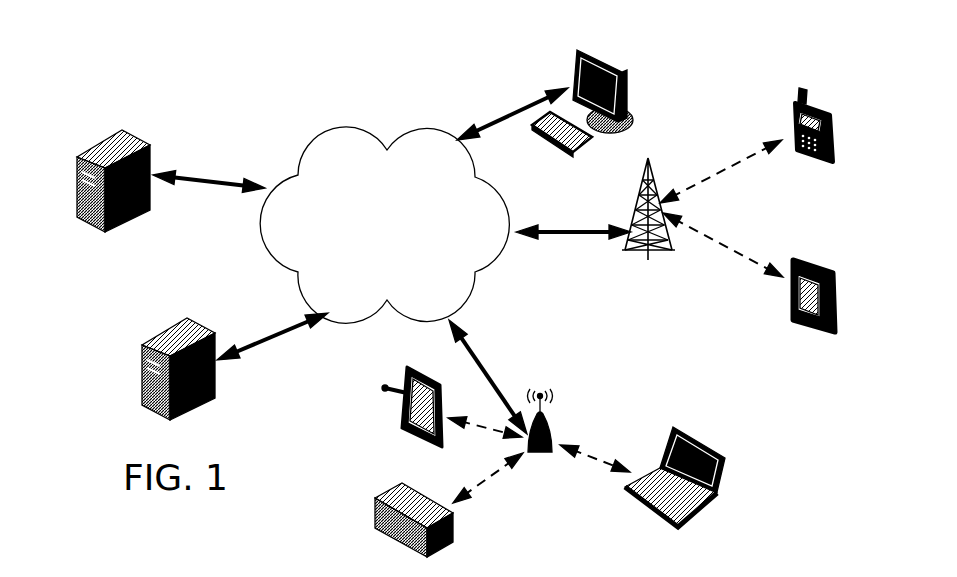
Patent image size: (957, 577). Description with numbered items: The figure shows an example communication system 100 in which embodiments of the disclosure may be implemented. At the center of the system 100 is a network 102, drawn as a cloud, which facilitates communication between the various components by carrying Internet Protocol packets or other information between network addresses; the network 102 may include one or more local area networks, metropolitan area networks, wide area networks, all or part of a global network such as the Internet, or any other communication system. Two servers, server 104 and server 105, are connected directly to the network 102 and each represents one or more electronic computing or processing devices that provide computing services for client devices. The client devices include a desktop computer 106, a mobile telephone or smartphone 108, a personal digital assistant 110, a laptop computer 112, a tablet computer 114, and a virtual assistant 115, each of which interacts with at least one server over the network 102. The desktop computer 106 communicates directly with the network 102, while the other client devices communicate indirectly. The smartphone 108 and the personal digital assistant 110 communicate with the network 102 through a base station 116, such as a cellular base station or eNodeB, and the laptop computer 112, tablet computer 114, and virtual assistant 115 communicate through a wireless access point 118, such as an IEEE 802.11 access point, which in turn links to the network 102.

The communication system 100 is at (172, 50).
The network 102 is at (302, 134).
The server 104 is at (93, 147).
The server 105 is at (157, 335).
The desktop computer 106 is at (572, 62).
The mobile telephone or smartphone 108 is at (835, 110).
The personal digital assistant (PDA) 110 is at (830, 267).
The laptop computer 112 is at (728, 468).
The tablet computer 114 is at (398, 382).
The virtual assistant 115 is at (375, 507).
The base station 116 is at (672, 248).
The wireless access point 118 is at (548, 417).